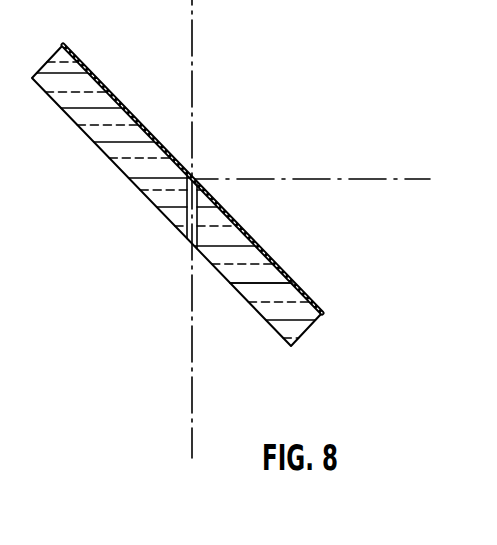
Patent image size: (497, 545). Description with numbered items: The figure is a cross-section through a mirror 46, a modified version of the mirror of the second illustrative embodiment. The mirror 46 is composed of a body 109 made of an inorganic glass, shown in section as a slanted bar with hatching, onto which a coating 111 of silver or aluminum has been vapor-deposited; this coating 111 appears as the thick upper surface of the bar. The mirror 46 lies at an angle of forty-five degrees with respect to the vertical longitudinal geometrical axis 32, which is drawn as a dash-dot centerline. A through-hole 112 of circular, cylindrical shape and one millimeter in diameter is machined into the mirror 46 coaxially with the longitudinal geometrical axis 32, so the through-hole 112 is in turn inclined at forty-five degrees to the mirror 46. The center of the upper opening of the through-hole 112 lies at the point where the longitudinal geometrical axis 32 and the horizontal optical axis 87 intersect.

The longitudinal geometrical axis 32 is at (186, 428).
The optical axis 87 is at (370, 178).
The mirror 46 is at (124, 176).
The coating 111 is at (256, 246).
The through-hole 112 is at (187, 216).
The body 109 is at (268, 289).